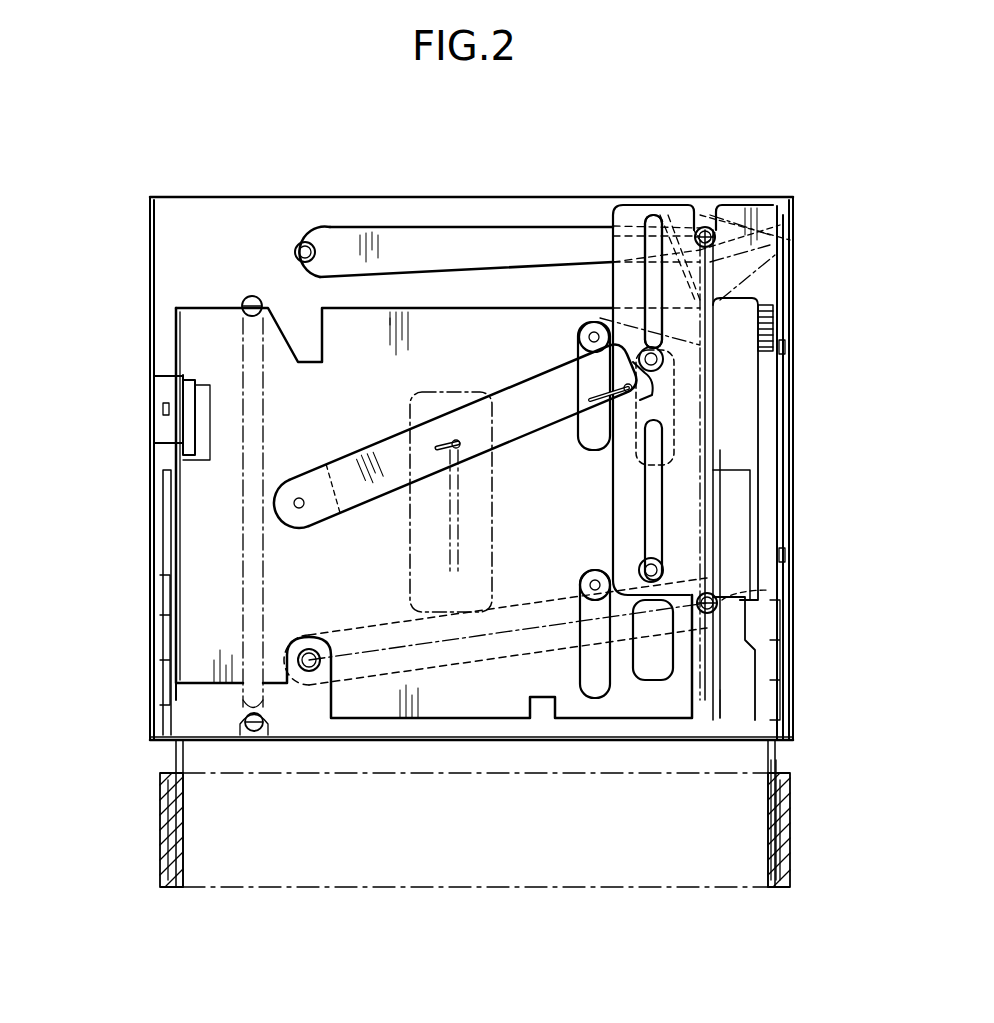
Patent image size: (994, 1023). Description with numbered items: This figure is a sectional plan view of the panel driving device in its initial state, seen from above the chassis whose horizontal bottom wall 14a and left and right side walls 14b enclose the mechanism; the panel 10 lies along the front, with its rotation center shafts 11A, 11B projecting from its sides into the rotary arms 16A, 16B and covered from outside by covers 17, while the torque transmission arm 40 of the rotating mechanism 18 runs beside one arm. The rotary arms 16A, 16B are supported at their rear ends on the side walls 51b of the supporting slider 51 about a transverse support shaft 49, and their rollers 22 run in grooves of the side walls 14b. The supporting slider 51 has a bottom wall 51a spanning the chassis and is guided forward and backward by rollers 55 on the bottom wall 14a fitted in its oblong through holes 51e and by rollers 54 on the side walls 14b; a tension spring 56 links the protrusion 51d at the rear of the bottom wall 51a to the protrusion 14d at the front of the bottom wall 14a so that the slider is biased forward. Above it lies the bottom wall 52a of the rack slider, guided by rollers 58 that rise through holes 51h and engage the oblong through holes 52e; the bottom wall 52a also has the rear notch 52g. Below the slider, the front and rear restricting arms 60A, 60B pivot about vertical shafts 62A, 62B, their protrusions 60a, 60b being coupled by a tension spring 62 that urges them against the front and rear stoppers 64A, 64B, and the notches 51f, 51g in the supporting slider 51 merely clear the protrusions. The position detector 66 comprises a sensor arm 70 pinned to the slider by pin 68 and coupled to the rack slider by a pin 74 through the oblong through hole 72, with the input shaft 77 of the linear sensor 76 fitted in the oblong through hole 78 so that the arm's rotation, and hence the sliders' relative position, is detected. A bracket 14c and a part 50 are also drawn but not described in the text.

The openable panel 10 is at (520, 890).
The rotation center shaft 11A is at (790, 820).
The rotation center shaft 11B is at (165, 858).
The bottom wall 14a is at (252, 205).
The side walls 14b is at (152, 300).
The bracket of cover 14c is at (200, 392).
The protrusion 14d is at (256, 732).
The rotary arm 16A is at (778, 765).
The rotary arm 16B is at (168, 778).
The cover 17 is at (165, 825).
The rotating mechanism 18 is at (600, 318).
The rollers 22 is at (165, 610).
The torque transmission arm 40 is at (767, 790).
The support shaft 49 is at (162, 555).
The rack 50 is at (772, 300).
The supporting slider 51 is at (366, 303).
The bottom wall 51a is at (443, 325).
The side walls 51b is at (176, 325).
The protrusion 51d is at (252, 295).
The through holes 51e is at (580, 370).
The notch 51f is at (690, 704).
The notch 51g is at (654, 225).
The holes 51h is at (660, 460).
The bottom wall 52a is at (622, 528).
The through holes 52e is at (640, 320).
The notch 52g is at (722, 215).
The rollers 54 is at (160, 408).
The rollers 55 is at (582, 340).
The tension spring 56 is at (265, 410).
The rollers 58 is at (662, 365).
The front restricting arm 60A is at (447, 675).
The rear restricting arm 60B is at (432, 245).
The protrusion 60a is at (707, 612).
The protrusion 60b is at (705, 228).
The tension spring 62 is at (793, 215).
The vertical shaft 62A is at (309, 672).
The vertical shaft 62B is at (305, 240).
The front stopper 64A is at (770, 590).
The rear stopper 64B is at (775, 260).
The position detector 66 is at (363, 417).
The pin 68 is at (300, 508).
The sensor arm 70 is at (373, 487).
The through hole 72 is at (580, 425).
The pin 74 is at (645, 392).
The linear sensor 76 is at (410, 580).
The input shaft 77 is at (457, 440).
The oblong through hole 78 is at (442, 450).